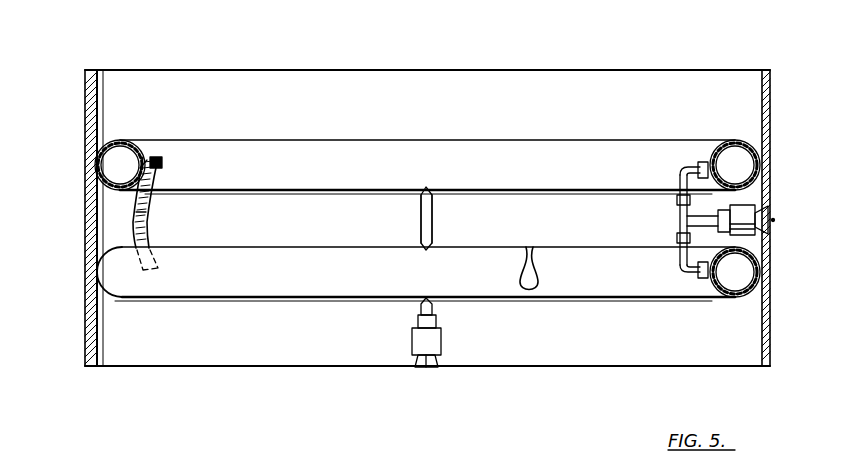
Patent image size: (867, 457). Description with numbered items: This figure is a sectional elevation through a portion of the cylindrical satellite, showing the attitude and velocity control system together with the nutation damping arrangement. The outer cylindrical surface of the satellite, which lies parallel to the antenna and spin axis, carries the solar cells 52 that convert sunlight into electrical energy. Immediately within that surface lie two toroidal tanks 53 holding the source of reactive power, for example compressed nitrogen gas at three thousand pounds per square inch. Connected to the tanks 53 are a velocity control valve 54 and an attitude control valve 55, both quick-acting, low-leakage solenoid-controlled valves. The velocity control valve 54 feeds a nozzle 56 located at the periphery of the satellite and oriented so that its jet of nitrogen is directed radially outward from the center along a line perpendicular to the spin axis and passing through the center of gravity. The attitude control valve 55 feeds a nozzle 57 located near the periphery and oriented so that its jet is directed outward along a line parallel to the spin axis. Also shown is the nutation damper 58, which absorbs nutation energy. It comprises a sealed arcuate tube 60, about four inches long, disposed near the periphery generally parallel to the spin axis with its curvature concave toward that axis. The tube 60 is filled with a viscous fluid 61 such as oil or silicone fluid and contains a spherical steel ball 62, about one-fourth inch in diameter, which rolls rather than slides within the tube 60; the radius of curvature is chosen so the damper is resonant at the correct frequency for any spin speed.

The solar cells 52 is at (82, 263).
The tanks 53 is at (318, 152).
The velocity control valve 54 is at (748, 208).
The attitude control valve 55 is at (441, 343).
The nozzle 56 is at (774, 222).
The nozzle 57 is at (418, 372).
The nutation damper 58 is at (166, 220).
The sealed arcuate tube 60 is at (148, 180).
The viscous fluid 61 is at (165, 167).
The spherical steel ball 62 is at (135, 214).